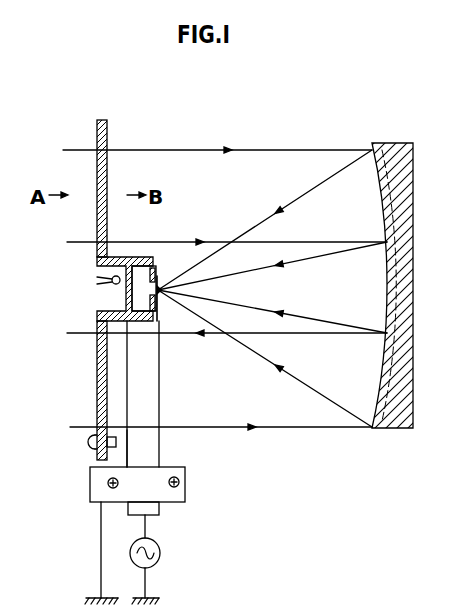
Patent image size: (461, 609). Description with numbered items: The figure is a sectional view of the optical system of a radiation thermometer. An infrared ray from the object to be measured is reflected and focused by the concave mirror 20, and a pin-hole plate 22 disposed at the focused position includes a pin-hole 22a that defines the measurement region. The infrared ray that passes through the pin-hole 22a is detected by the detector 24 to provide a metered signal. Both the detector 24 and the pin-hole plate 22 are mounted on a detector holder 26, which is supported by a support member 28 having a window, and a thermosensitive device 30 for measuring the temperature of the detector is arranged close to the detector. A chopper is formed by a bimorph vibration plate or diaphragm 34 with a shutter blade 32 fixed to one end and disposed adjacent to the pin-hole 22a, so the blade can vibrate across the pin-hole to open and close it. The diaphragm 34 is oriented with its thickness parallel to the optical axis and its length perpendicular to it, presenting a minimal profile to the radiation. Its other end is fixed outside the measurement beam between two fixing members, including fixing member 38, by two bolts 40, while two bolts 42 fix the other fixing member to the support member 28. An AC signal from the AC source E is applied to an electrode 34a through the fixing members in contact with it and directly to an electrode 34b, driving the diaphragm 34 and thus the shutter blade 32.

The concave mirror 20 is at (397, 150).
The pin-hole plate 22 is at (159, 305).
The pin-hole 22a is at (160, 272).
The detector 24 is at (140, 282).
The detector holder 26 is at (138, 322).
The support member 28 is at (103, 119).
The thermosensitive device 30 is at (112, 284).
The shutter blade 32 is at (162, 300).
The bimorph vibration plate or diaphragm 34 is at (160, 400).
The electrode 34a is at (153, 445).
The electrode 34b is at (158, 510).
The fixing member 38 is at (90, 480).
The bolts 40 is at (179, 483).
The bolts 42 is at (82, 443).
The AC source E is at (162, 558).